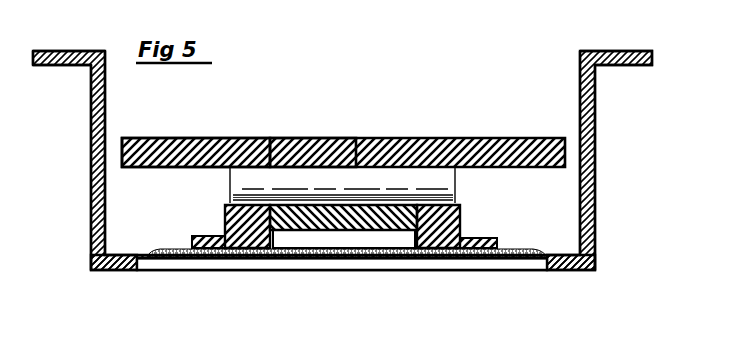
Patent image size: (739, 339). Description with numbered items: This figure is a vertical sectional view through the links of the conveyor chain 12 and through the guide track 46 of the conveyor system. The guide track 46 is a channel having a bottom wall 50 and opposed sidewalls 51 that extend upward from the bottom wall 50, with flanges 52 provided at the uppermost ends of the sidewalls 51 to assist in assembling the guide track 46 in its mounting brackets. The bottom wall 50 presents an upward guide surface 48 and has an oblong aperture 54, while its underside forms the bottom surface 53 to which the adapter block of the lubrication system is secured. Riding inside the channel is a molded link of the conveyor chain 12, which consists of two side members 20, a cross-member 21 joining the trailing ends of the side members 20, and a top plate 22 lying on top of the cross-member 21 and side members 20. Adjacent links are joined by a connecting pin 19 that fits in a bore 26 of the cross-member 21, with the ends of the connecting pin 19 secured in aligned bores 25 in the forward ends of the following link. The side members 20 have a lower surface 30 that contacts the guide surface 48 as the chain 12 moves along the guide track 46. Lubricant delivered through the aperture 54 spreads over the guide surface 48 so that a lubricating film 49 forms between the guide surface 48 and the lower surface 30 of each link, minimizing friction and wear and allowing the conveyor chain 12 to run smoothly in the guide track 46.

The conveyor chain 12 is at (468, 128).
The connecting pin 19 is at (353, 172).
The side members 20 is at (228, 215).
The cross-member 21 is at (311, 215).
The top plate 22 is at (190, 137).
The aligned bores 25 is at (432, 176).
The bore 26 is at (306, 176).
The lower surface 30 is at (188, 250).
The guide track 46 is at (604, 156).
The guide surface 48 is at (124, 258).
The lubricating film 49 is at (165, 257).
The bottom wall 50 is at (560, 272).
The sidewalls 51 is at (91, 113).
The flanges 52 is at (80, 50).
The bottom surface 53 is at (103, 272).
The oblong aperture 54 is at (160, 270).